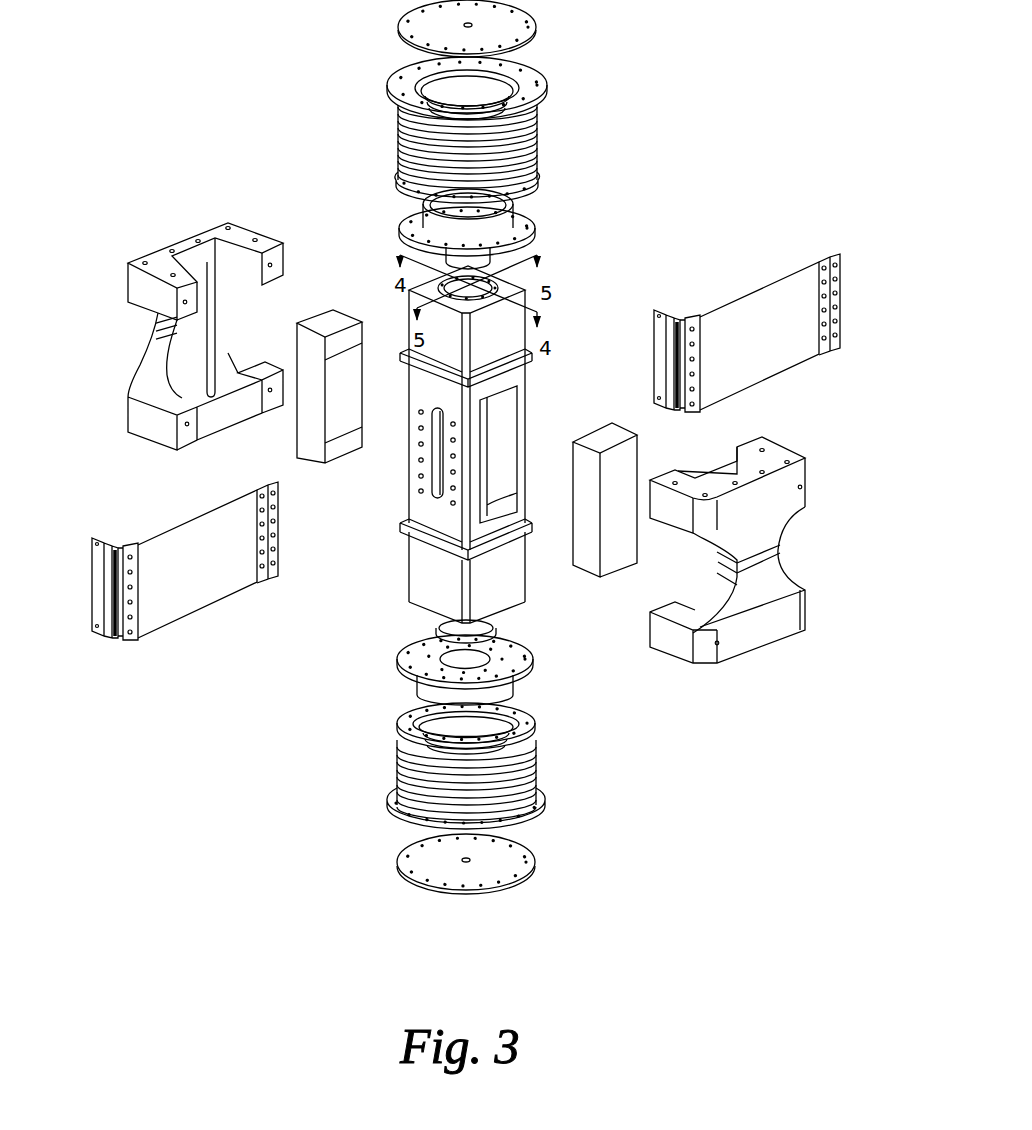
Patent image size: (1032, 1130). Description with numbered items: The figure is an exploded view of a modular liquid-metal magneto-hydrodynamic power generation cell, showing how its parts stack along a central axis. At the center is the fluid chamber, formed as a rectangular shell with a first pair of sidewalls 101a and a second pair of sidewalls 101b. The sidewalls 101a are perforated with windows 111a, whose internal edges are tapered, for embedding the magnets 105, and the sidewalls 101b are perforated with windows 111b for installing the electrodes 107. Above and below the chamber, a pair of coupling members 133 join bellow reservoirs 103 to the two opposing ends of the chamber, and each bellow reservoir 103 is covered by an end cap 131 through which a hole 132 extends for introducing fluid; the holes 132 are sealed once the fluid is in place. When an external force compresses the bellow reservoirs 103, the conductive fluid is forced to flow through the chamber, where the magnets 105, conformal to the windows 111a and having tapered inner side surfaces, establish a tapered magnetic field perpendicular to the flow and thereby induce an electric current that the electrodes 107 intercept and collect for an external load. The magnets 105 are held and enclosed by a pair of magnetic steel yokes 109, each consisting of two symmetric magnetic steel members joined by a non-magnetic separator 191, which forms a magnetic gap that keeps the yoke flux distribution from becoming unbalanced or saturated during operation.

The first pair of sidewalls 101a is at (497, 350).
The second pair of sidewalls 101b is at (430, 568).
The bellow reservoirs 103 is at (540, 134).
The magnets 105 is at (365, 380).
The electrodes 107 is at (744, 313).
The magnetic steel yokes 109 is at (192, 245).
The windows 111a is at (502, 474).
The windows 111b is at (431, 456).
The end cap 131 is at (399, 27).
The hole 132 is at (472, 24).
The coupling members 133 is at (402, 228).
The non-magnetic separator 191 is at (781, 553).